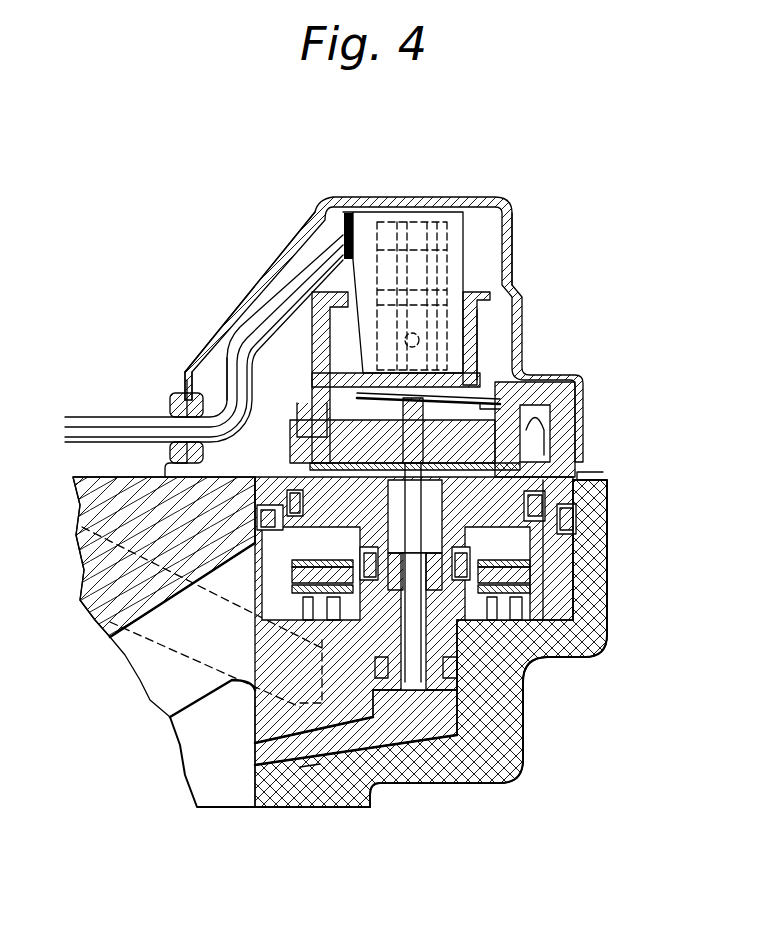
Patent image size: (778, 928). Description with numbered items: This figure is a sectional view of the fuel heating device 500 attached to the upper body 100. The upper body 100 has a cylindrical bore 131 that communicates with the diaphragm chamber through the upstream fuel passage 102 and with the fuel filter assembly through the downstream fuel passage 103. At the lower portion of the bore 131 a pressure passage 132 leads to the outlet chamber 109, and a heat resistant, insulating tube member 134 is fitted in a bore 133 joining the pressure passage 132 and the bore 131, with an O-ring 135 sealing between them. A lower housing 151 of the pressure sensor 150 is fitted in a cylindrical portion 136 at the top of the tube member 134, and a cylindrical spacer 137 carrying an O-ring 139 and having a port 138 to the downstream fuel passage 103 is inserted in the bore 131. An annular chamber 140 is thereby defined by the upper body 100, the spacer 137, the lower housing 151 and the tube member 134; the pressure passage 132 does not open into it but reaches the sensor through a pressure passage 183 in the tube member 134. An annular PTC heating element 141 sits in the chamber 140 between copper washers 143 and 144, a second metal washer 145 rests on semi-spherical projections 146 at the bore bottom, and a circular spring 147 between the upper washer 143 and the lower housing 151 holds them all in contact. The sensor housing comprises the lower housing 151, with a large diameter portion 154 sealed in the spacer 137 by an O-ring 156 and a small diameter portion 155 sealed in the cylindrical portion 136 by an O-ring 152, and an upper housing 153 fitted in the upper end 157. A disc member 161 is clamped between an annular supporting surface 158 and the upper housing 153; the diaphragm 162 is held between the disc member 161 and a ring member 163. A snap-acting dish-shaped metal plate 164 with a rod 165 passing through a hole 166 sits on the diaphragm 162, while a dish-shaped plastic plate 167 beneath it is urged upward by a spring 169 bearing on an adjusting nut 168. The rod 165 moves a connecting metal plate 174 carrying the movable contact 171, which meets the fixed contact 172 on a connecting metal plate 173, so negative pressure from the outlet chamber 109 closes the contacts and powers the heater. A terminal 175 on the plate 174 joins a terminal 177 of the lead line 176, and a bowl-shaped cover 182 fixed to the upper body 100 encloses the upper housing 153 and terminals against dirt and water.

The upper body 100 is at (530, 776).
The upstream fuel passage 102 is at (108, 621).
The downstream fuel passage 103 is at (147, 663).
The outlet chamber 109 is at (220, 790).
The cylindrical bore 131 is at (603, 607).
The pressure passage 132 is at (353, 753).
The bore 133 is at (497, 745).
The tube member 134 is at (523, 700).
The O-ring 135 is at (527, 700).
The cylindrical portion 136 is at (528, 668).
The cylindrical spacer 137 is at (600, 540).
The port 138 is at (160, 703).
The O-ring 139 is at (560, 520).
The annular chamber 140 is at (590, 563).
The annular ceramic heating element 141 is at (603, 609).
The upper metal washer 143 is at (580, 607).
The lower metal washer 144 is at (585, 630).
The second metal washer 145 is at (577, 648).
The projections 146 is at (557, 658).
The circular spring 147 is at (120, 513).
The pressure sensor 150 is at (600, 462).
The lower housing 151 is at (583, 530).
The O-ring 152 is at (273, 787).
The upper housing 153 is at (508, 300).
The large diameter portion 154 is at (600, 474).
The small diameter portion 155 is at (340, 790).
The O-ring 156 is at (567, 510).
The upper end 157 is at (550, 402).
The annular supporting surface 158 is at (567, 450).
The disc member 161 is at (567, 427).
The diaphragm 162 is at (160, 397).
The ring member 163 is at (170, 420).
The dish-shaped metal plate 164 is at (210, 373).
The rod 165 is at (522, 410).
The hole 166 is at (295, 355).
The dish-shaped plastic plate 167 is at (160, 475).
The adjusting nut 168 is at (453, 740).
The spring 169 is at (403, 720).
The movable contact 171 is at (280, 277).
The fixed contact 172 is at (267, 307).
The connecting metal plate 173 is at (217, 340).
The connecting metal plate 174 is at (492, 375).
The terminal 175 is at (440, 315).
The lead line 176 is at (292, 242).
The terminal 177 is at (378, 205).
The bowl-shaped cover 182 is at (440, 200).
The pressure passage 183 is at (410, 687).
The fuel heating device 500 is at (556, 338).